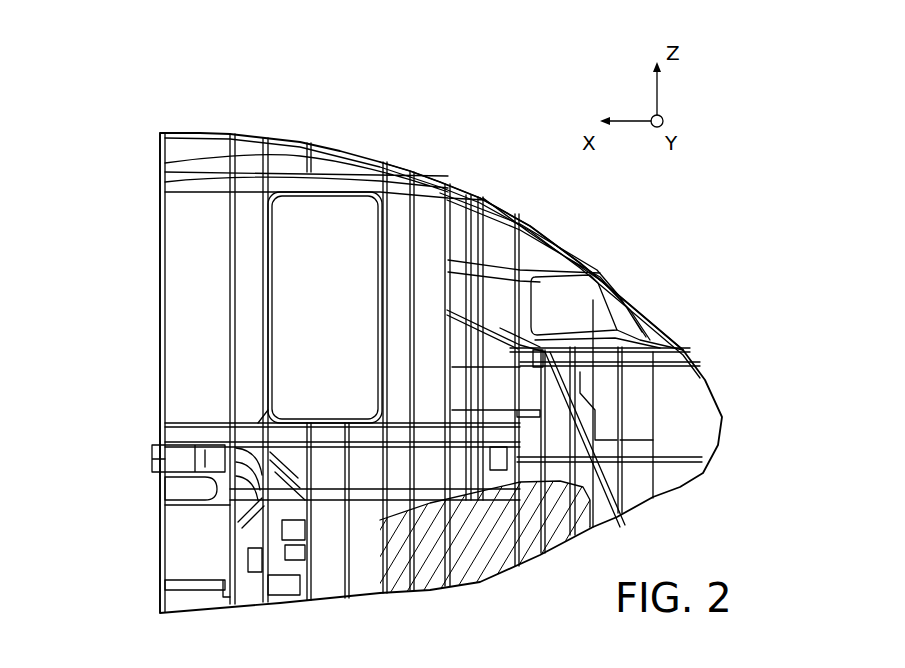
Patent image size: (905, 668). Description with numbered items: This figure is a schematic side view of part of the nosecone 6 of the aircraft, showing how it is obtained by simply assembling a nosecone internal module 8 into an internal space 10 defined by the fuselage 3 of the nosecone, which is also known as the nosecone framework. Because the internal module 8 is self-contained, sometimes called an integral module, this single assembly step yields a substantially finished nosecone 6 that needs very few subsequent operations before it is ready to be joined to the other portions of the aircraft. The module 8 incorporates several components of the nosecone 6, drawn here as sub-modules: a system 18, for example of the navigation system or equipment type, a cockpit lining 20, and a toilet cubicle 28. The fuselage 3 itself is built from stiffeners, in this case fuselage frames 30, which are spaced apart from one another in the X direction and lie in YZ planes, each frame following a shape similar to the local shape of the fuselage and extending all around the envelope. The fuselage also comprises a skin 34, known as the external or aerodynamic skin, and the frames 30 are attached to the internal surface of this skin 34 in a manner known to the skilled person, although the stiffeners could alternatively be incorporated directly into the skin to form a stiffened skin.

The fuselage 3 is at (233, 134).
The nosecone 6 is at (634, 211).
The nosecone internal module 8 is at (181, 405).
The internal space 10 is at (340, 312).
The system 18 is at (641, 336).
The cockpit lining 20 is at (495, 246).
The toilet cubicle 28 is at (431, 246).
The fuselage frames 30 is at (160, 240).
The skin 34 is at (477, 571).